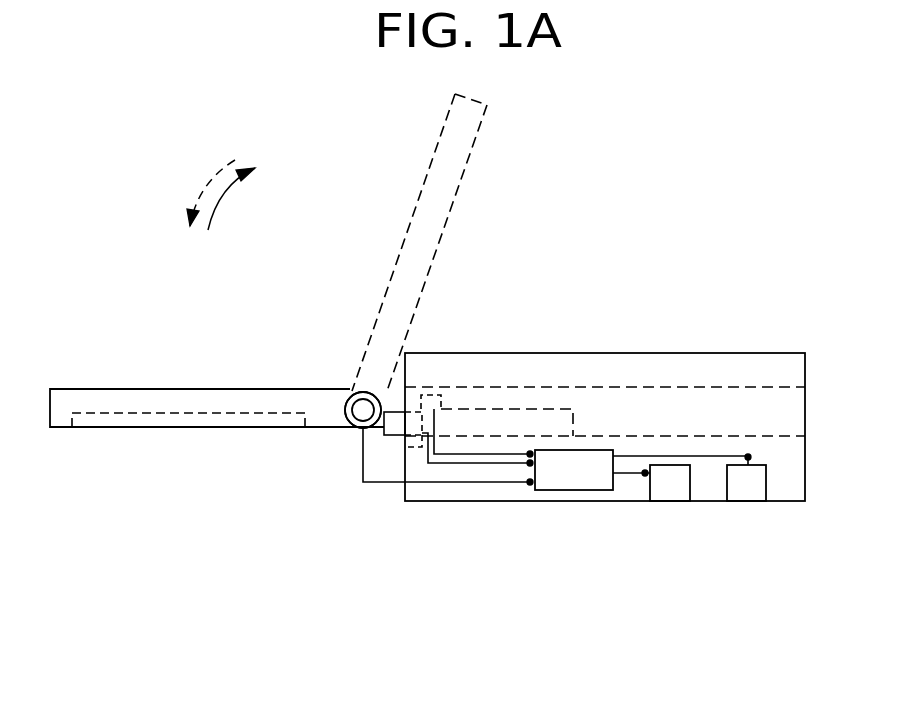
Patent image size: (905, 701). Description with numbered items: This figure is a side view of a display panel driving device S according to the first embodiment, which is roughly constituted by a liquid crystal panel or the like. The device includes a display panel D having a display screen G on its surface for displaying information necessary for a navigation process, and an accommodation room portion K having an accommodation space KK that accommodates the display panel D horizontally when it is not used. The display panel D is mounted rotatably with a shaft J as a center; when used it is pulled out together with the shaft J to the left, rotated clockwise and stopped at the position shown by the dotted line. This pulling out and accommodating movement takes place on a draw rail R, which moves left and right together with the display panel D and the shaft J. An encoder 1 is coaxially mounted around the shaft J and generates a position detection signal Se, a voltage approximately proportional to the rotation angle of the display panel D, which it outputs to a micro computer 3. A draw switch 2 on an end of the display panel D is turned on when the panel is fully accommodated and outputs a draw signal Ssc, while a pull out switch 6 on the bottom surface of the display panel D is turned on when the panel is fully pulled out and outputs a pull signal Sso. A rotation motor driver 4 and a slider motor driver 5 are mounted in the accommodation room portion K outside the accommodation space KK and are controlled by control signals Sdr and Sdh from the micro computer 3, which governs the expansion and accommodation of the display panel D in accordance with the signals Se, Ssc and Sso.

The display panel D is at (467, 177).
The display screen G is at (163, 428).
The shaft J is at (346, 416).
The encoder 1 is at (345, 393).
The draw switch 2 is at (440, 403).
The accommodation room portion K is at (679, 353).
The accommodation space KK is at (766, 400).
The draw rail R is at (577, 423).
The position detection signal Se is at (373, 483).
The pull out switch 6 is at (418, 447).
The pull signal Sso is at (455, 463).
The draw signal Ssc is at (507, 454).
The micro computer 3 is at (573, 479).
The control signal Sdr is at (633, 474).
The control signal Sdh is at (733, 452).
The rotation motor driver 4 is at (672, 494).
The slider motor driver 5 is at (747, 494).
The display panel driving device S is at (476, 600).